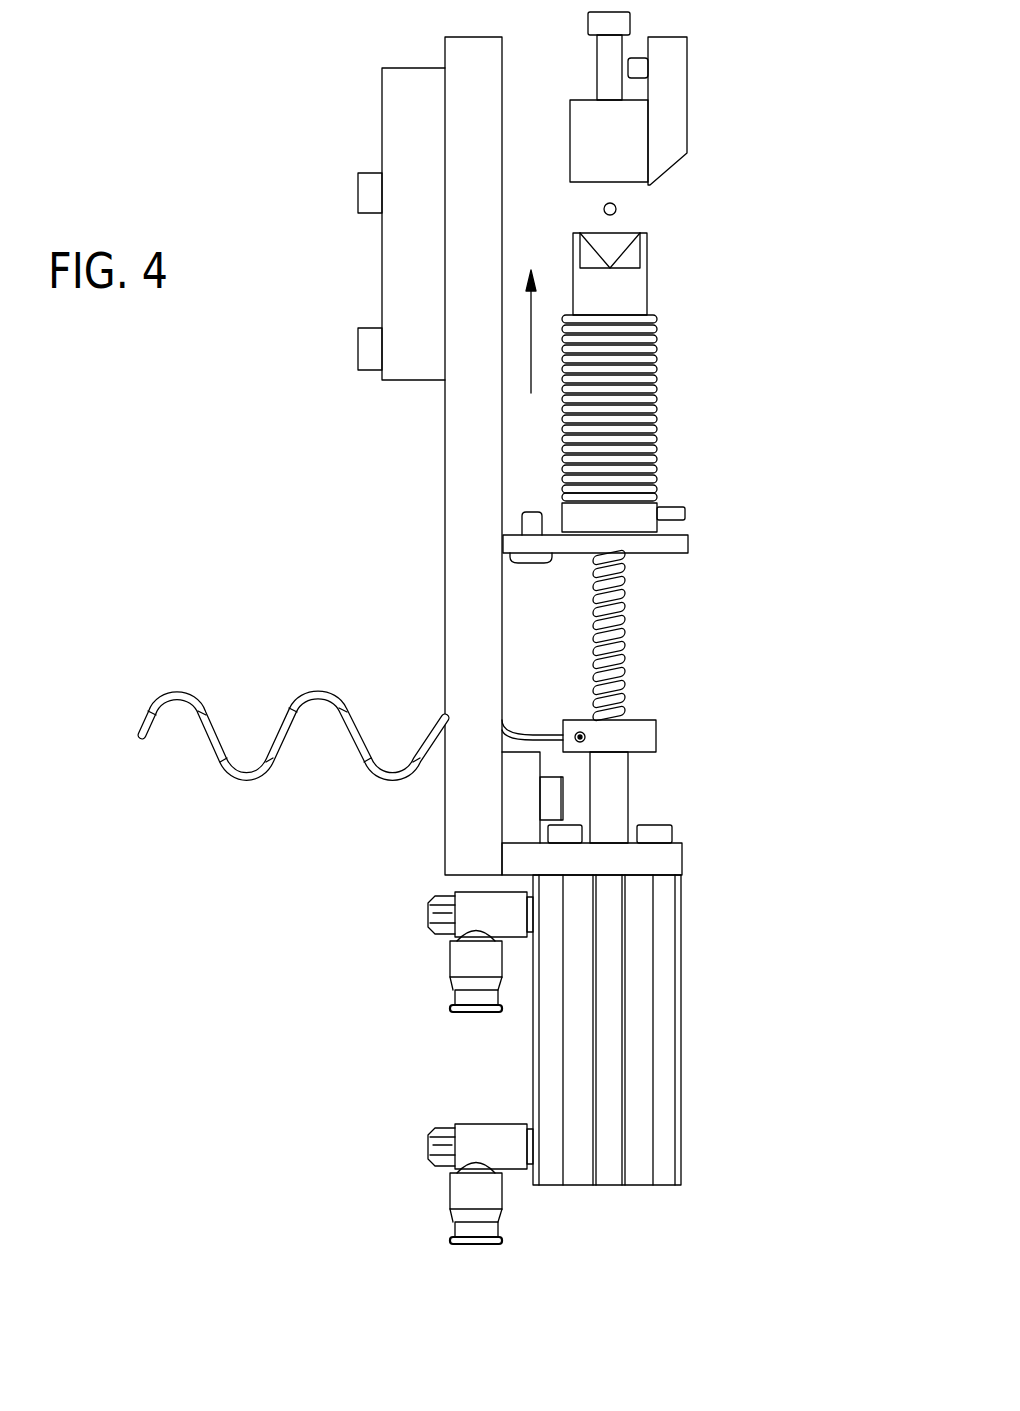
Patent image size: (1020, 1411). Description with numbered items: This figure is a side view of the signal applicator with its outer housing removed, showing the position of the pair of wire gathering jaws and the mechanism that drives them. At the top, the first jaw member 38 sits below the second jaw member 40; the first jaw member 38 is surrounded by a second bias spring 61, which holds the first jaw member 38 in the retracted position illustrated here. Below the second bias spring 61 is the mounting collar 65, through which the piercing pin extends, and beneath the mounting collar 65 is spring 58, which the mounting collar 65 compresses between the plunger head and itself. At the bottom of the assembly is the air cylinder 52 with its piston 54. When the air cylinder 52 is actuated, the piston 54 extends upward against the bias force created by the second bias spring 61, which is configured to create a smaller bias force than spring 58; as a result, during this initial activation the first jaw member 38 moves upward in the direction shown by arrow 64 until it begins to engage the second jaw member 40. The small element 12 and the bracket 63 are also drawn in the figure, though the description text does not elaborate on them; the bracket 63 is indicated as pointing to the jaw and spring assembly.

The solder ball / sphere 12 is at (617, 206).
The first jaw member 38 is at (622, 297).
The second jaw member 40 is at (582, 138).
The air cylinder 52 is at (682, 1028).
The piston 54 is at (630, 798).
The spring 58 is at (623, 637).
The second bias spring 61 is at (660, 415).
The nozzle assembly 63 is at (752, 483).
The arrow 64 is at (524, 372).
The mounting collar 65 is at (642, 515).